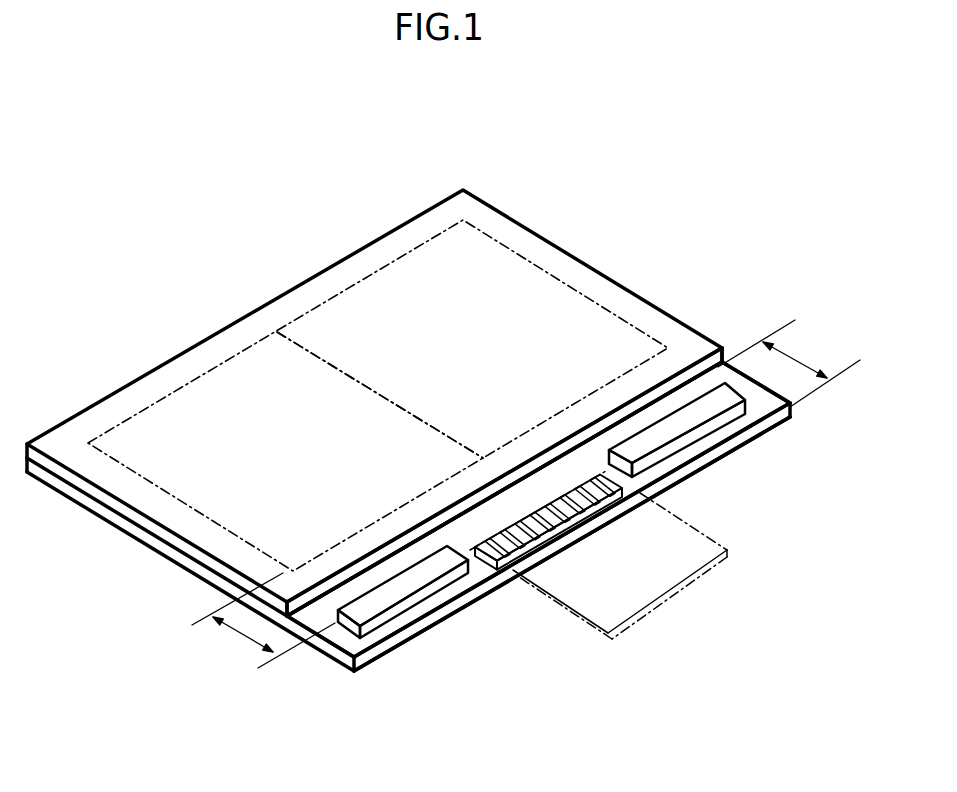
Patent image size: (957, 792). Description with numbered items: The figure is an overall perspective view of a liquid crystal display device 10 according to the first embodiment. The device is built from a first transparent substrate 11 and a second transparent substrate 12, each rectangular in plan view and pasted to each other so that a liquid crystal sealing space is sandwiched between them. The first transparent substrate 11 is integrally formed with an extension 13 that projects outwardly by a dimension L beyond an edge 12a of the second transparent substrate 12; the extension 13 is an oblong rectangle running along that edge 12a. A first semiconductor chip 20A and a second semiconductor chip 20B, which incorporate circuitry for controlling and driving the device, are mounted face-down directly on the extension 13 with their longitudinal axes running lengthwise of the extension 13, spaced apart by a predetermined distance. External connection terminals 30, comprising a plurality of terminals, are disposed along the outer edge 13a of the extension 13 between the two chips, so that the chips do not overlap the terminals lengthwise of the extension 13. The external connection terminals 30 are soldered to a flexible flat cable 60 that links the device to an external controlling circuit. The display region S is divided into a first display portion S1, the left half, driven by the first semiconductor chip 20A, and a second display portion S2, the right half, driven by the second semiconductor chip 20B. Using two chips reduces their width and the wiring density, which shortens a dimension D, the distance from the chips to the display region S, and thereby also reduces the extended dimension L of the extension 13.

The liquid crystal display device 10 is at (408, 419).
The first transparent substrate 11 is at (125, 533).
The second transparent substrate 12 is at (78, 435).
The edge of second transparent substrate 12a is at (666, 396).
The extension 13 is at (673, 460).
The outer edge of extension 13a is at (447, 611).
The first semiconductor chip 20A is at (383, 596).
The second semiconductor chip 20B is at (697, 415).
The external connection terminals 30 is at (547, 545).
The flexible flat cable 60 is at (667, 574).
The display region S is at (413, 247).
The first display portion S1 is at (227, 498).
The second display portion S2 is at (490, 268).
The dimension D is at (263, 620).
The dimension L is at (789, 363).